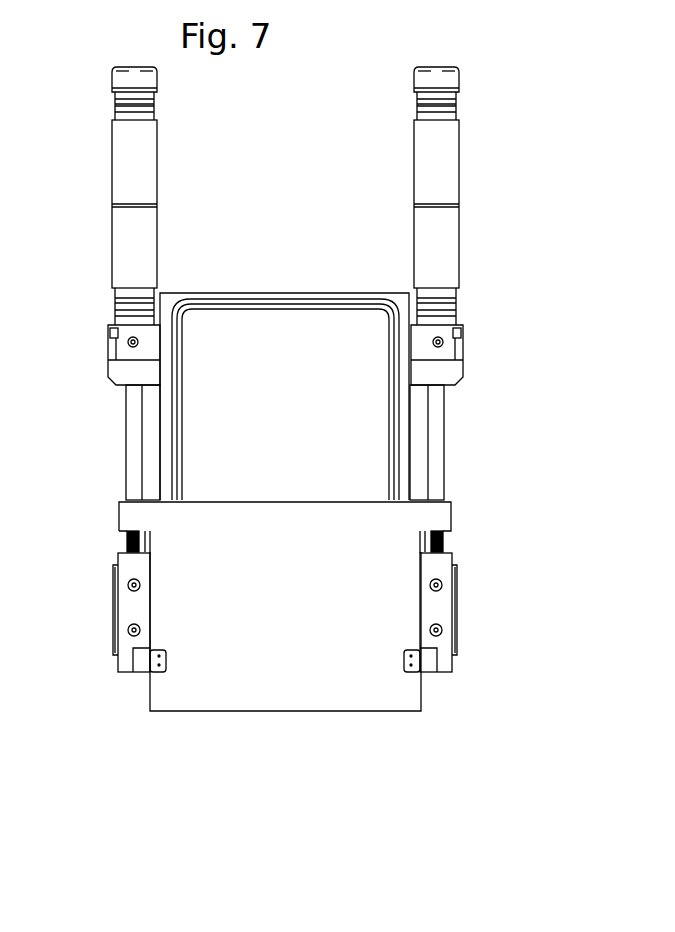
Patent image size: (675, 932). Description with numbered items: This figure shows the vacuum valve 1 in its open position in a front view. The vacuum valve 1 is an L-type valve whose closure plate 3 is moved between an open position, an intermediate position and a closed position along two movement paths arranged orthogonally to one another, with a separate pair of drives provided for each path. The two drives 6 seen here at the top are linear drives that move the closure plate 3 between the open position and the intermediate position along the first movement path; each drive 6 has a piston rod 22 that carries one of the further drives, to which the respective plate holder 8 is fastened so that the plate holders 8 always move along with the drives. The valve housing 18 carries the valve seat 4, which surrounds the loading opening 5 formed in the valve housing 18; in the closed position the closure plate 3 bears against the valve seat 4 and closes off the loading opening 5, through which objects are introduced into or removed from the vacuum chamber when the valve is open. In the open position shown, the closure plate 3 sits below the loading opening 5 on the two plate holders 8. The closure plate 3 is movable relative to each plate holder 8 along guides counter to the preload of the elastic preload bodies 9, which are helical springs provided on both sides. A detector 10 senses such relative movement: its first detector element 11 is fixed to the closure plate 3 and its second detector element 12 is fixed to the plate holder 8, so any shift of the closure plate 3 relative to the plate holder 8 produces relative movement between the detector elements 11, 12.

The vacuum valve 1 is at (309, 184).
The closure plate 3 is at (223, 693).
The valve seat 4 is at (345, 306).
The loading opening 5 is at (303, 324).
The drive 6 is at (140, 175).
The plate holder 8 is at (130, 607).
The elastic preload body 9 is at (126, 543).
The detector 10 is at (426, 683).
The first detector element 11 is at (412, 668).
The second detector element 12 is at (437, 668).
The valve housing 18 is at (200, 292).
The piston rod 22 is at (136, 431).